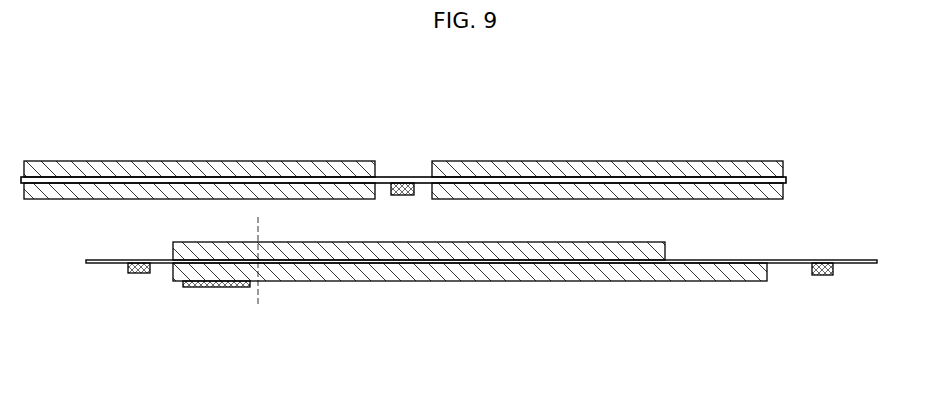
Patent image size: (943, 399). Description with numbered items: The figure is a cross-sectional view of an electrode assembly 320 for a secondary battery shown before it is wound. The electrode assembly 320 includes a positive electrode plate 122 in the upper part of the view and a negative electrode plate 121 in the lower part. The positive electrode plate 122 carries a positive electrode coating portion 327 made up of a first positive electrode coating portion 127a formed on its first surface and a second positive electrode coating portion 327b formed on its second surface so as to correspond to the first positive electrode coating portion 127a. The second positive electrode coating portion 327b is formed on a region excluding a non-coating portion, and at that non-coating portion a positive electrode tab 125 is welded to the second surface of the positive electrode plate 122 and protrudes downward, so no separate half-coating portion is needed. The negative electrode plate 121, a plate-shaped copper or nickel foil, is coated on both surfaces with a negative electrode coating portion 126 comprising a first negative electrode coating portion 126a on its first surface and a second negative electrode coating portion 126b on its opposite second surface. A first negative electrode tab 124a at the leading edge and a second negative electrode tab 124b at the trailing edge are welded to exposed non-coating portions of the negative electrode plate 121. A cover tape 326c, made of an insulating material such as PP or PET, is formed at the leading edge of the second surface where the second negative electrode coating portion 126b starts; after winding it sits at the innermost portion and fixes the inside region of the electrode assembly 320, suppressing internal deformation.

The electrode assembly 320 is at (877, 141).
The positive electrode plate 122 is at (108, 175).
The positive electrode coating portion 327 is at (348, 108).
The first positive electrode coating portion 127a is at (262, 161).
The second positive electrode coating portion 327b is at (331, 193).
The positive electrode tab 125 is at (403, 185).
The negative electrode plate 121 is at (98, 264).
The first negative electrode tab 124a is at (137, 274).
The second negative electrode tab 124b is at (822, 276).
The negative electrode coating portion 126 is at (590, 338).
The first negative electrode coating portion 126a is at (575, 253).
The second negative electrode coating portion 126b is at (505, 282).
The cover tape 326c is at (215, 288).